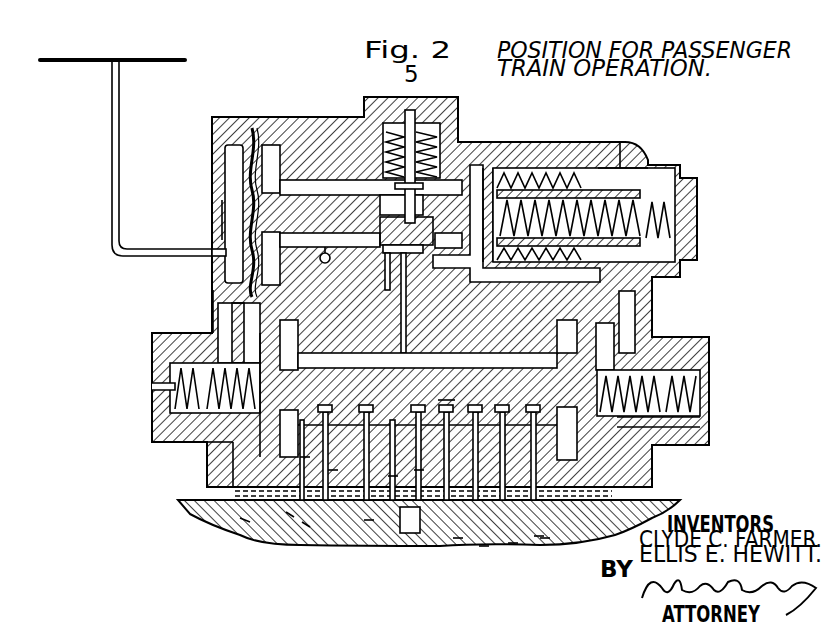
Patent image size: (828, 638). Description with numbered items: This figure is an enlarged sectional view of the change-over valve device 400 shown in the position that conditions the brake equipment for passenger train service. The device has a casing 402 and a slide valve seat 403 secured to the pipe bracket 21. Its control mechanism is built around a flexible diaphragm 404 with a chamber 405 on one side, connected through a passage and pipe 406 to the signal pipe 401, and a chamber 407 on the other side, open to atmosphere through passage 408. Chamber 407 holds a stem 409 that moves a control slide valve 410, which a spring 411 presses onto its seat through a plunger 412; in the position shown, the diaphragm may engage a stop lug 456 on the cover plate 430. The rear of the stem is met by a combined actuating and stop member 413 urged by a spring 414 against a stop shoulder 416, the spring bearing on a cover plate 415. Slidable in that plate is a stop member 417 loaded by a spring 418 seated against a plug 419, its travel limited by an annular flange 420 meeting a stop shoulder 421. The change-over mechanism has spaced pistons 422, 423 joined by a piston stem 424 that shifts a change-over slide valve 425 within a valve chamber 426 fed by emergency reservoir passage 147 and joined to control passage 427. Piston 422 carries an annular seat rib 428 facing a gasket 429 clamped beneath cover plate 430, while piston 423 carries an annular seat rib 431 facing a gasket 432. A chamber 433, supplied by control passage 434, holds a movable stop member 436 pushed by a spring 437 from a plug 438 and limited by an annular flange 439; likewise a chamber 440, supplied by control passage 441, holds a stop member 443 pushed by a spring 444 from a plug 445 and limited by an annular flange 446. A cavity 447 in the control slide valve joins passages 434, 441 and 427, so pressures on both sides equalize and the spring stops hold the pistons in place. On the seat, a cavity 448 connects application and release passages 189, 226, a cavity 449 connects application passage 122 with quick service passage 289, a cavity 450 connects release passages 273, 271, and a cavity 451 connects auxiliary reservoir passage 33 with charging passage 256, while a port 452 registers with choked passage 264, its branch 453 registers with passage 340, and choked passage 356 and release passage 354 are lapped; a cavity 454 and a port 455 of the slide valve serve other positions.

The pipe bracket 21 is at (183, 513).
The auxiliary reservoir passage 33 is at (545, 540).
The application passage 122 is at (333, 472).
The emergency reservoir passage 147 is at (305, 525).
The application and release passage 189 is at (290, 515).
The application and release passage 226 is at (305, 460).
The auxiliary reservoir charging passage 256 is at (539, 538).
The choked passage 264 is at (419, 472).
The release passage 271 is at (484, 548).
The release passage 273 is at (458, 540).
The quick service passage 289 is at (369, 522).
The passage 340 is at (393, 478).
The release passage 354 is at (513, 545).
The choked passage 356 is at (391, 485).
The change-over valve device 400 is at (508, 136).
The signal pipe 401 is at (110, 40).
The casing 402 is at (248, 118).
The slide valve seat 403 is at (240, 520).
The flexible diaphragm 404 is at (247, 155).
The chamber 405 is at (240, 165).
The passage and pipe 406 is at (112, 146).
The chamber 407 is at (300, 187).
The passage 408 is at (321, 267).
The stem 409 is at (318, 205).
The control slide valve 410 is at (362, 186).
The spring 411 is at (420, 138).
The plunger 412 is at (470, 128).
The combined actuating and stop member 413 is at (560, 172).
The spring 414 is at (565, 187).
The cover plate 415 is at (632, 157).
The stop shoulder 416 is at (459, 182).
The stop member 417 is at (573, 195).
The spring 418 is at (652, 212).
The plug 419 is at (692, 175).
The annular flange 420 is at (694, 207).
The stop shoulder 421 is at (640, 248).
The piston 422 is at (215, 510).
The piston 423 is at (652, 478).
The piston stem 424 is at (493, 378).
The change-over slide valve 425 is at (543, 395).
The valve chamber 426 is at (476, 363).
The control passage 427 is at (492, 259).
The annular seat rib 428 is at (290, 442).
The gasket 429 is at (240, 450).
The cover plate 430 is at (212, 218).
The annular seat rib 431 is at (652, 455).
The gasket 432 is at (614, 360).
The chamber 433 is at (233, 436).
The control passage 434 is at (215, 297).
The movable stop member 436 is at (235, 338).
The spring 437 is at (175, 384).
The plug 438 is at (152, 346).
The annular flange 439 is at (205, 410).
The chamber 440 is at (709, 432).
The control passage 441 is at (652, 290).
The stop member 443 is at (645, 353).
The spring 444 is at (709, 355).
The plug 445 is at (702, 380).
The annular flange 446 is at (655, 418).
The cavity 447 is at (352, 264).
The cavity 448 is at (284, 388).
The cavity 449 is at (427, 445).
The cavity 450 is at (453, 395).
The cavity 451 is at (598, 394).
The port 452 is at (393, 395).
The branch 453 is at (383, 393).
The cavity 454 is at (518, 446).
The port 455 is at (447, 400).
The stop lug 456 is at (222, 212).